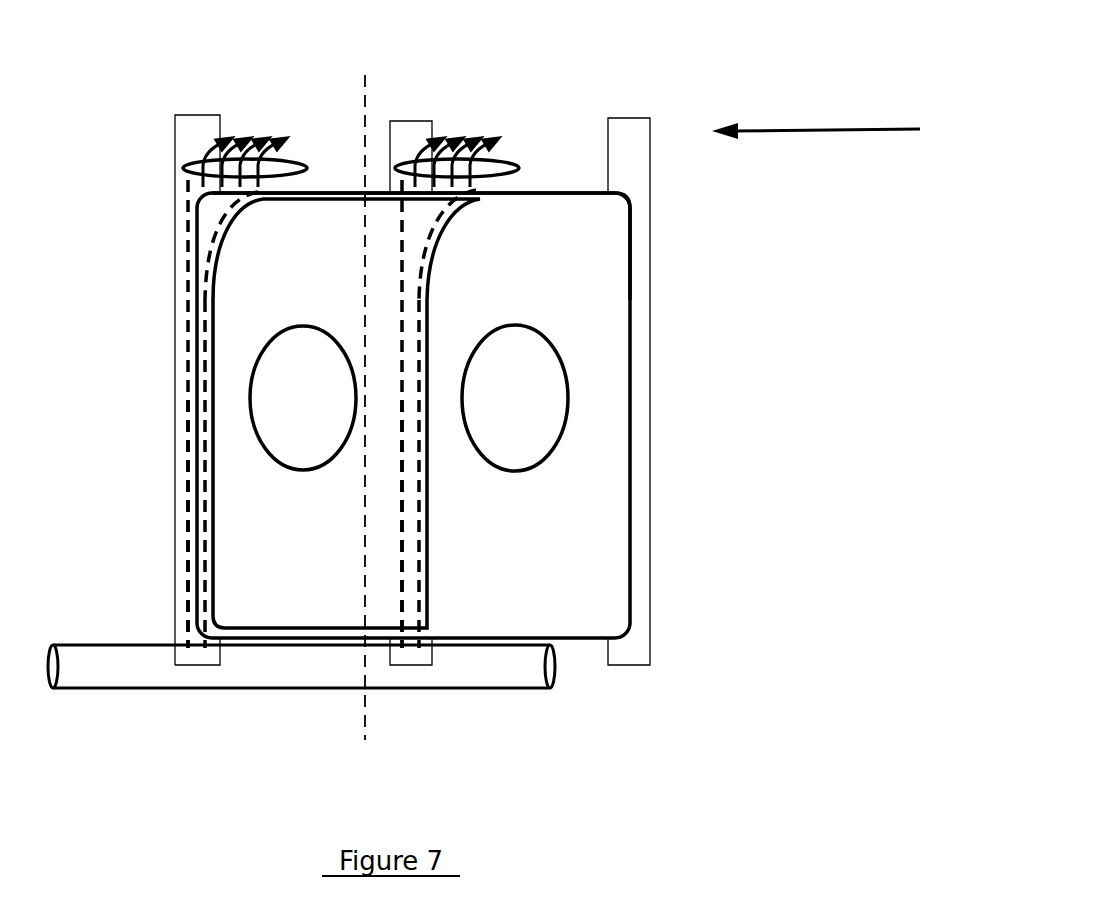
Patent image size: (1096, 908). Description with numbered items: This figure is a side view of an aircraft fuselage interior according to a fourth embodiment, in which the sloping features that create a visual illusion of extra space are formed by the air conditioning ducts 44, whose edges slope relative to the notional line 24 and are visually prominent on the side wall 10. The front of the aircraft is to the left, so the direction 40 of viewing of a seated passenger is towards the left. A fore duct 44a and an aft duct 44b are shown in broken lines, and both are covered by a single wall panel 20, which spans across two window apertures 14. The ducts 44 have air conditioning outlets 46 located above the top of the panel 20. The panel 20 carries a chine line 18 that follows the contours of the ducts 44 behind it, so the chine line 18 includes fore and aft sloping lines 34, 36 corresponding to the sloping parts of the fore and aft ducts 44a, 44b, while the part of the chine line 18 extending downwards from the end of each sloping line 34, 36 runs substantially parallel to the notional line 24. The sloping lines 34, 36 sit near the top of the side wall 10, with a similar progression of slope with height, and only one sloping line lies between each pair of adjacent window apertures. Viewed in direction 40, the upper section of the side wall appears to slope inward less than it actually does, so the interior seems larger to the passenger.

The side wall 10 is at (604, 514).
The window apertures 14 is at (520, 387).
The chine line 18 is at (427, 596).
The wall panel 20 is at (587, 208).
The notional line 24 is at (363, 714).
The fore sloping line 34 is at (240, 232).
The aft sloping line 36 is at (448, 236).
The direction of viewing 40 is at (818, 142).
The air conditioning ducts 44 is at (218, 226).
The fore duct 44a is at (183, 536).
The aft duct 44b is at (405, 531).
The air conditioning outlets 46 is at (200, 162).